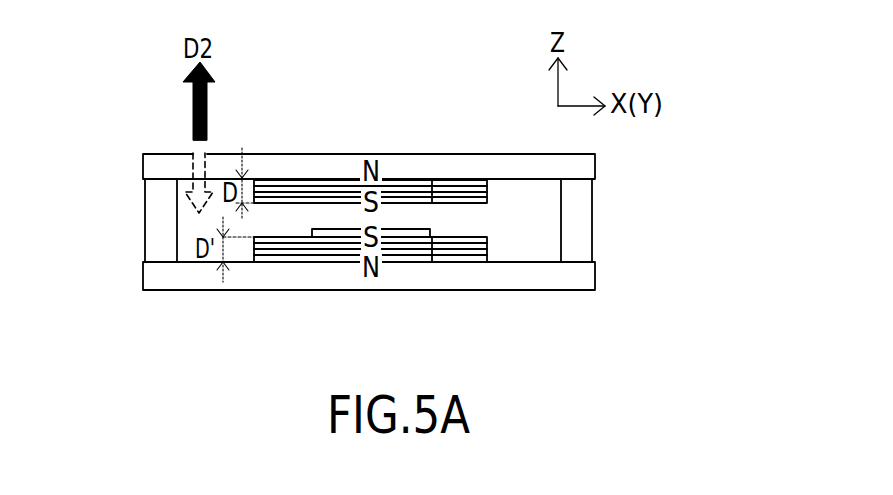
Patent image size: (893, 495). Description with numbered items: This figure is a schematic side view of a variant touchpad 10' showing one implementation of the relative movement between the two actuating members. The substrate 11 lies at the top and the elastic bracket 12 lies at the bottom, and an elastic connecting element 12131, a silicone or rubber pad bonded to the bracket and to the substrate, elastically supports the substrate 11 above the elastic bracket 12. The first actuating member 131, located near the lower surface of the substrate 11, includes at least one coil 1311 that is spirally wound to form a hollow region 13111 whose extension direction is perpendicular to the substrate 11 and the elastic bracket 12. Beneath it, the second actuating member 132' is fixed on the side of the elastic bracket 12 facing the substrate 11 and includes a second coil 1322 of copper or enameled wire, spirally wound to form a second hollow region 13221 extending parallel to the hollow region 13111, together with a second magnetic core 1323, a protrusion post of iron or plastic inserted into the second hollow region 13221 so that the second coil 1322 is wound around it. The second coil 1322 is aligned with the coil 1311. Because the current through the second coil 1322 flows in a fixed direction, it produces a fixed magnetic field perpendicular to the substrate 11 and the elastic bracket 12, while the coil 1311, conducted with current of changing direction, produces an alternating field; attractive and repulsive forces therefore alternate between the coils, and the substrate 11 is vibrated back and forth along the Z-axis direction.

The touchpad 10' is at (145, 61).
The substrate 11 is at (312, 163).
The elastic bracket 12 is at (195, 277).
The elastic connecting element 12131 is at (160, 225).
The first actuating member 131 is at (501, 159).
The coil 1311 is at (398, 158).
The hollow region 13111 is at (410, 178).
The second actuating member 132' is at (498, 287).
The second coil 1322 is at (414, 287).
The second hollow region 13221 is at (345, 253).
The second magnetic core 1323 is at (430, 242).